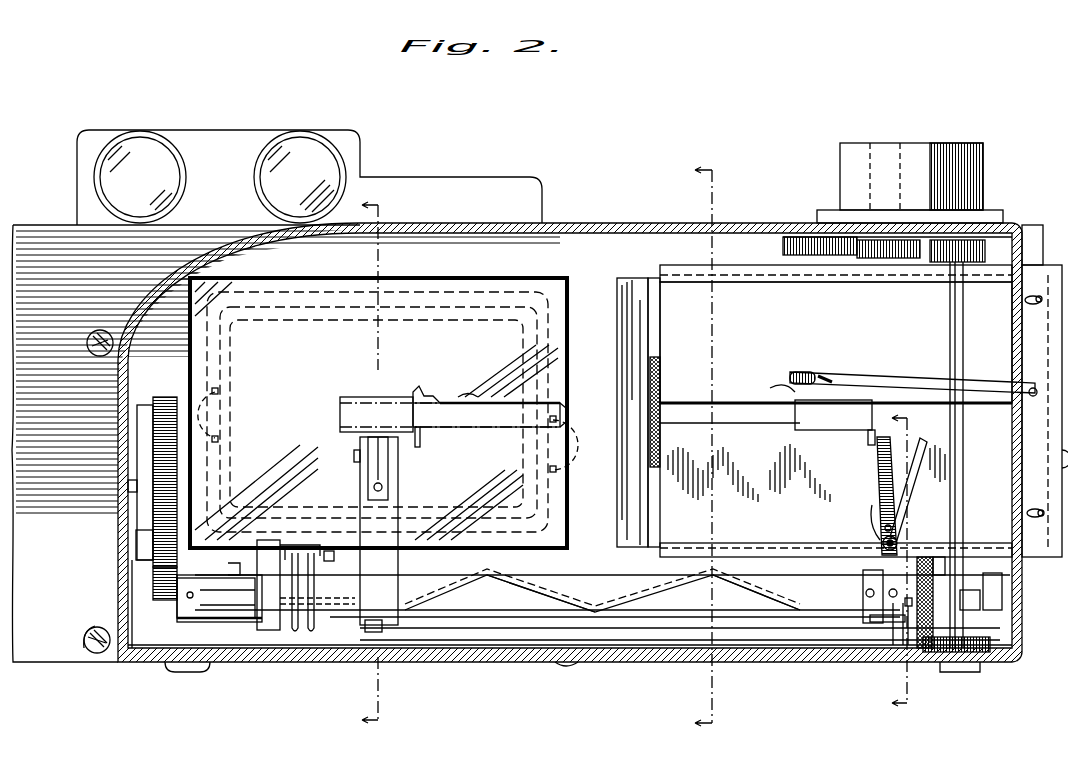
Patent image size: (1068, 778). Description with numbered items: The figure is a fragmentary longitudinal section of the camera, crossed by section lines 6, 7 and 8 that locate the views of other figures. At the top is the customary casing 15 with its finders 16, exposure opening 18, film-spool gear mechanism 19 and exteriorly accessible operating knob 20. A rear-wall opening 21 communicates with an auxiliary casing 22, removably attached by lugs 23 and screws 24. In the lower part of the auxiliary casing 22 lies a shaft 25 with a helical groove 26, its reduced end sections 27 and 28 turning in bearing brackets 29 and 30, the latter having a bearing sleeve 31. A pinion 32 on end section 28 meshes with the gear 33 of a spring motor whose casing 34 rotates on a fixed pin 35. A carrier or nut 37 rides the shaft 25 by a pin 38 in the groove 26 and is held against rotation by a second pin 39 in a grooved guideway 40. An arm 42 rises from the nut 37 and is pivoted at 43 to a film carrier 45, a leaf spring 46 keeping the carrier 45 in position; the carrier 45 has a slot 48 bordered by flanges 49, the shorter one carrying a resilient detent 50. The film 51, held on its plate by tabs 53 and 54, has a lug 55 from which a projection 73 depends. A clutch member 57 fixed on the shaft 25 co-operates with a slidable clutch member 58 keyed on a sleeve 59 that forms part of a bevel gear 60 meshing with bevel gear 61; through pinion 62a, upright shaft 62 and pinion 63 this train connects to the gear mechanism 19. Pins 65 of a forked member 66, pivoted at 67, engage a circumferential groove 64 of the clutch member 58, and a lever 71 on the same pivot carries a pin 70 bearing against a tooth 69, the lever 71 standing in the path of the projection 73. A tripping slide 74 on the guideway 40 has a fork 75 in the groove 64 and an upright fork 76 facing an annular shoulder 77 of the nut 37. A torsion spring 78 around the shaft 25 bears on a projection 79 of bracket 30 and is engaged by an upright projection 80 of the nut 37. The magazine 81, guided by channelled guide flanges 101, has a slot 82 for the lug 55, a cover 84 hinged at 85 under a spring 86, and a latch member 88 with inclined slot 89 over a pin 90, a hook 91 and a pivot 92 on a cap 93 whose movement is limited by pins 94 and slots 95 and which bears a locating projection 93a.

The section line 6— 6 is at (705, 454).
The section line 7— 7 is at (372, 467).
The section line 8— 8 is at (901, 564).
The casing 15 is at (40, 228).
The finders 16 is at (262, 162).
The exposure opening 18 is at (560, 278).
The gear mechanism 19 is at (870, 255).
The operating knob 20 is at (890, 150).
The opening 21 is at (420, 292).
The auxiliary casing 22 is at (1014, 224).
The lugs 23 is at (94, 357).
The screws 24 is at (100, 357).
The shaft 25 is at (594, 582).
The helical groove 26 is at (530, 592).
The reduced end section 27 is at (978, 590).
The reduced end section 28 is at (232, 580).
The bearing bracket 29 is at (1003, 590).
The bearing bracket 30 is at (258, 630).
The bearing sleeve 31 is at (215, 608).
The pinion 32 is at (162, 605).
The gear 33 is at (153, 522).
The casing 34 is at (145, 447).
The pin 35 is at (128, 487).
The carrier or nut 37 is at (391, 592).
The pin 38 is at (430, 600).
The second pin 39 is at (380, 632).
The grooved guideway 40 is at (553, 642).
The arm or member 42 is at (398, 520).
The pivot 43 is at (356, 456).
The film carrier 45 is at (495, 320).
The leaf spring 46 is at (388, 465).
The slot 48 is at (497, 428).
The flanges 49 is at (500, 388).
The resilient catch or detent 50 is at (422, 392).
The film 51 is at (440, 307).
The tab 53 is at (205, 394).
The tab 54 is at (575, 452).
The lug 55 is at (355, 397).
The clutch member 57 is at (863, 590).
The clutch member 58 is at (906, 648).
The sleeve 59 is at (925, 557).
The bevel gear 60 is at (945, 560).
The bevel gear 61 is at (990, 640).
The upright shaft 62 is at (963, 472).
The pinion 62a is at (975, 674).
The pinion 63 is at (950, 262).
The circumferential groove 64 is at (870, 618).
The pins 65 is at (890, 590).
The forked member 66 is at (885, 530).
The pivot 67 is at (883, 542).
The lug or tooth 69 is at (870, 520).
The pin 70 is at (903, 530).
The lever 71 is at (880, 470).
The projection 73 is at (422, 440).
The tripping slide 74 is at (640, 652).
The fork 75 is at (893, 640).
The upright fork 76 is at (303, 636).
The annular shoulder 77 is at (330, 596).
The torsion spring 78 is at (272, 632).
The projection 79 is at (300, 545).
The upright projection 80 is at (330, 551).
The magazine 81 is at (836, 342).
The slot 82 is at (708, 402).
The cover 84 is at (617, 332).
The hinge 85 is at (652, 278).
The spring 86 is at (660, 380).
The latch member 88 is at (900, 384).
The inclined slot 89 is at (805, 375).
The pin 90 is at (835, 380).
The hook 91 is at (770, 385).
The pivot 92 is at (1030, 396).
The cap 93 is at (1022, 360).
The projection 93a is at (1062, 459).
The pins 94 is at (1028, 304).
The slots 95 is at (1030, 300).
The channelled guide flanges 101 is at (735, 268).